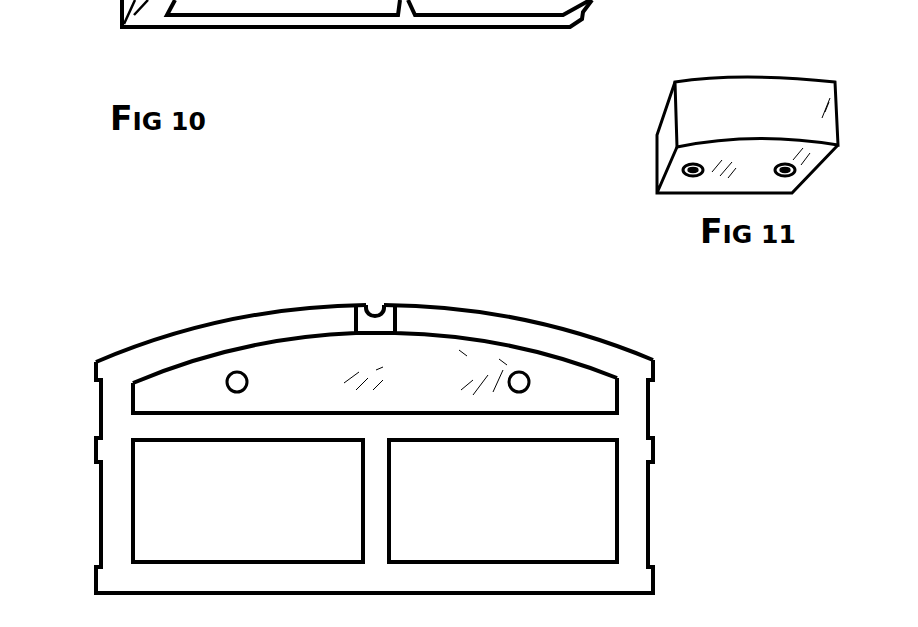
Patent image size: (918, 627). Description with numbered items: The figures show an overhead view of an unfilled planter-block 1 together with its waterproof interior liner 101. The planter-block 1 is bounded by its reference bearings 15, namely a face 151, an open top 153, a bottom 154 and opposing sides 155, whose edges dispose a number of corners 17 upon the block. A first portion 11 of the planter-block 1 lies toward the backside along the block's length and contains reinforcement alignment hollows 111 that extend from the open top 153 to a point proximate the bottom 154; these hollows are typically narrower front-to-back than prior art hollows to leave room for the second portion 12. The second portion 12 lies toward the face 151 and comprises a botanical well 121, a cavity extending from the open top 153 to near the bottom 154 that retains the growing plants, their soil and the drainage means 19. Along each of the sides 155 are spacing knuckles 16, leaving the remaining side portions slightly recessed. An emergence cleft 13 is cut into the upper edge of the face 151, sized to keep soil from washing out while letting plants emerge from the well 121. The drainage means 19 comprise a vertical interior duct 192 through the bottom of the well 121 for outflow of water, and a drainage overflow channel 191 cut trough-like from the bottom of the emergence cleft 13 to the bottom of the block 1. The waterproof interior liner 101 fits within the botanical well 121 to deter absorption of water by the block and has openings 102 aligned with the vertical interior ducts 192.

In FIG. 10, the planter-block 1 is at (335, 352).
In FIG. 10, the first portion 11 is at (341, 380).
In FIG. 10, the reinforcement alignment hollows 111 is at (364, 395).
In FIG. 10, the second portion 12 is at (375, 286).
In FIG. 10, the botanical well 121 is at (423, 311).
In FIG. 10, the emergence cleft 13 is at (323, 248).
In FIG. 10, the reference bearings 15 is at (522, 281).
In FIG. 10, the face 151 is at (528, 308).
In FIG. 10, the open top 153 is at (484, 297).
In FIG. 10, the bottom 154 is at (441, 296).
In FIG. 10, the opposing sides 155 is at (588, 287).
In FIG. 10, the spacing knuckles 16 is at (202, 403).
In FIG. 10, the corners 17 is at (514, 380).
In FIG. 10, the drainage means 19 is at (280, 287).
In FIG. 10, the drainage overflow channel 191 is at (311, 278).
In FIG. 10, the vertical interior duct 192 is at (209, 311).
In FIG. 11, the waterproof interior liner 101 is at (742, 110).
In FIG. 11, the openings 102 is at (739, 102).